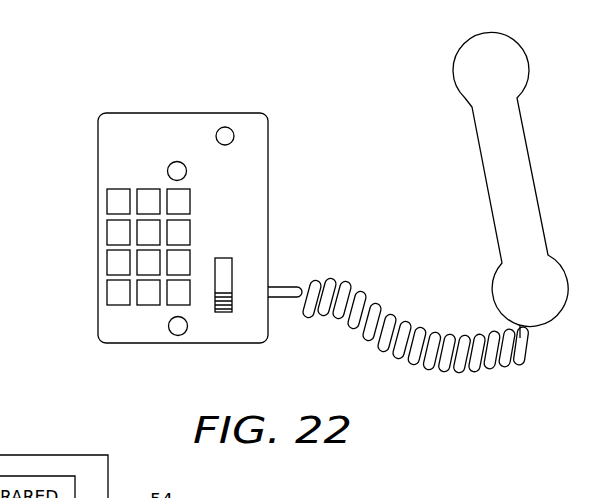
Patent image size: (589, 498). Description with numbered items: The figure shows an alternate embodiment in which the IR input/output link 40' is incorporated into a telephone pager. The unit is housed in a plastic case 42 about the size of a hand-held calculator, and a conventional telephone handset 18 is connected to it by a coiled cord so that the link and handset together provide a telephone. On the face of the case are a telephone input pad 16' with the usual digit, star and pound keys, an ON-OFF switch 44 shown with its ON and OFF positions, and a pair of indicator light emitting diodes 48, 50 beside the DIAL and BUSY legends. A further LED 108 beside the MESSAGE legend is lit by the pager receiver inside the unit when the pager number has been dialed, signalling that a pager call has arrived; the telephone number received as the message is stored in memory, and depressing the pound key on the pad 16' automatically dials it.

The IR input/output link 40' is at (199, 245).
The plastic case 42 is at (268, 129).
The LED 108 is at (232, 142).
The indicator light emitting diode 48 is at (168, 169).
The indicator light emitting diode 50 is at (182, 334).
The telephone input pad 16' is at (106, 247).
The ON-OFF switch 44 is at (232, 303).
The telephone handset 18 is at (493, 168).